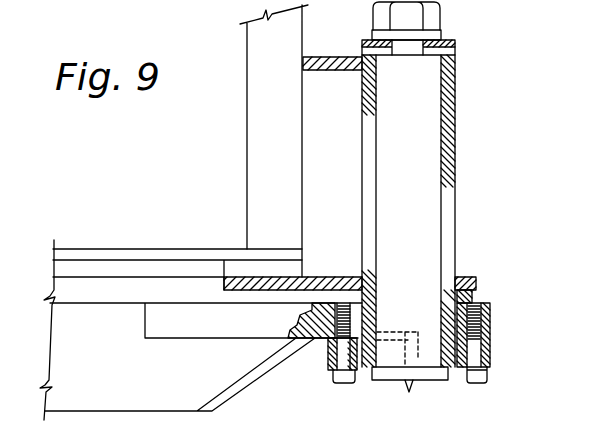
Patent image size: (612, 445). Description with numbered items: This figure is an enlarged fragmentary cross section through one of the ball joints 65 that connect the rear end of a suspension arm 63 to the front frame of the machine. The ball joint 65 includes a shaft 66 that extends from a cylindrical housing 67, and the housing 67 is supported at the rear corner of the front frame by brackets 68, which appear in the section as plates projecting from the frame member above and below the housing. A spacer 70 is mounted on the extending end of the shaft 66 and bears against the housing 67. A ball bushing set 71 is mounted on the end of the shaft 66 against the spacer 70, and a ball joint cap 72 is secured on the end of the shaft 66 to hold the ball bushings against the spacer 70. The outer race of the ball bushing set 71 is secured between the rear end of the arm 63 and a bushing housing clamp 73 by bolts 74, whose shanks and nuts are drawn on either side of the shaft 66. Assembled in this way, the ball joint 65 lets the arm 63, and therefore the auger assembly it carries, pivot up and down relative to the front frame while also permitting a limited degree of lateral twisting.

The arm 63 is at (149, 391).
The ball joint 65 is at (502, 292).
The shaft 66 is at (415, 193).
The cylindrical housing 67 is at (455, 207).
The bracket 68 is at (318, 71).
The spacer 70 is at (476, 291).
The ball bushing set 71 is at (452, 370).
The ball joint cap 72 is at (423, 378).
The bushing housing clamp 73 is at (487, 363).
The bolt 74 is at (338, 383).